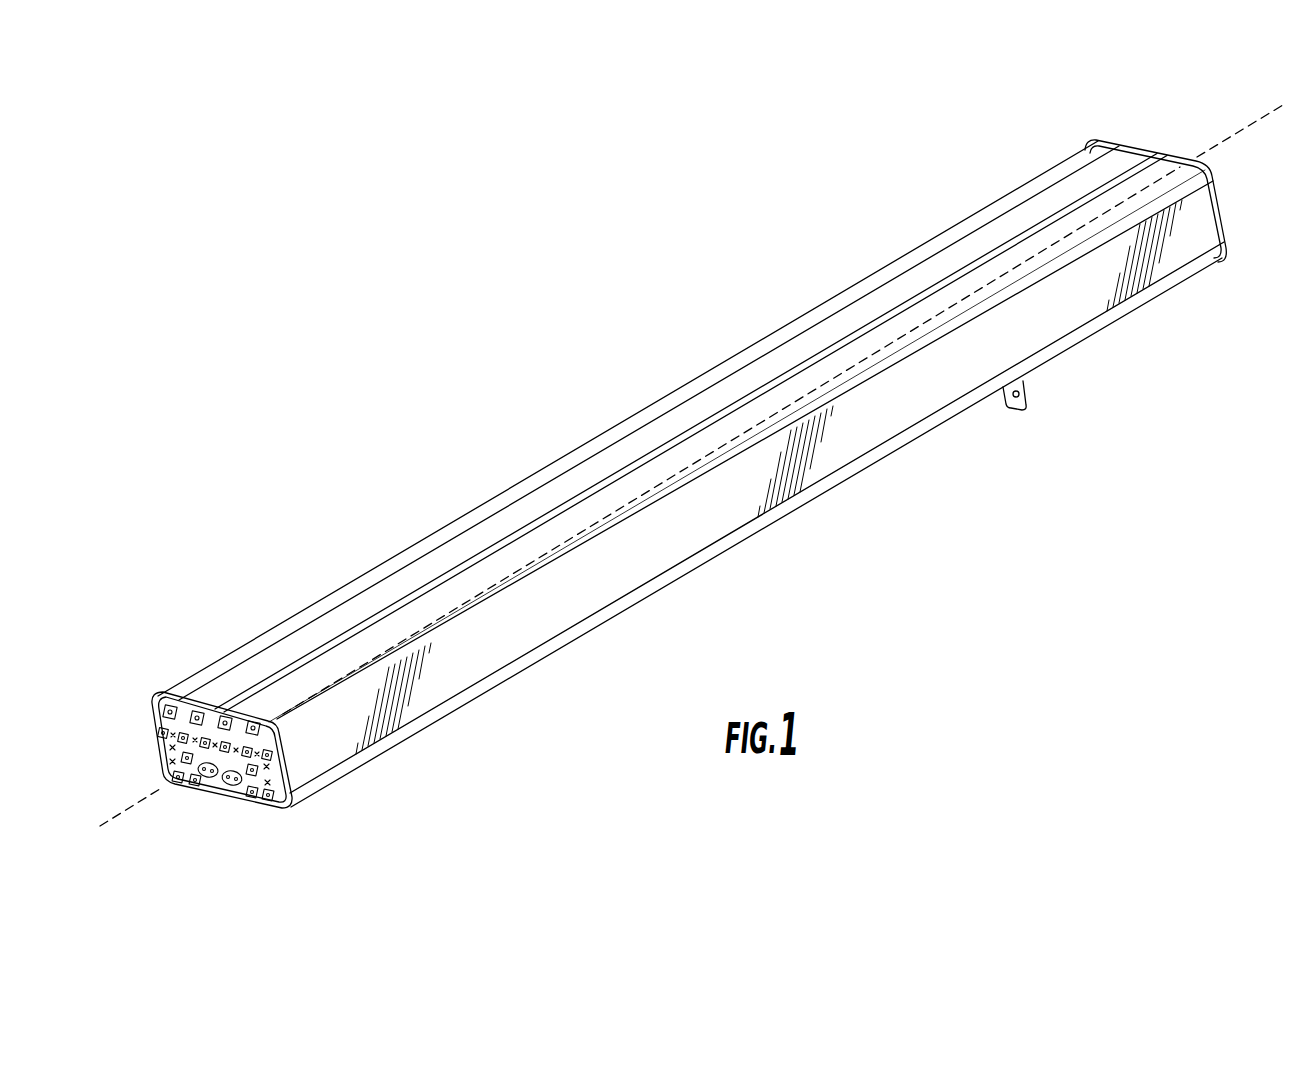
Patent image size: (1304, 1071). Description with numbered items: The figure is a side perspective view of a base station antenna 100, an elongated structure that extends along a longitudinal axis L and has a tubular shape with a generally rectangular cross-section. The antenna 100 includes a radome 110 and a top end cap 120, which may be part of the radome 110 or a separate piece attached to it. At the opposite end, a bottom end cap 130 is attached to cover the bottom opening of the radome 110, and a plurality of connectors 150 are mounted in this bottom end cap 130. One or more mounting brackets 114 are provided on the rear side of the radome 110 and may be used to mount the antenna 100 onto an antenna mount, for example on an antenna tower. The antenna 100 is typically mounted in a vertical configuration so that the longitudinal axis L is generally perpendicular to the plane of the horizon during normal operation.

The base station antenna 100 is at (685, 488).
The radome 110 is at (1166, 272).
The mounting bracket 114 is at (1016, 409).
The top end cap 120 is at (1186, 157).
The bottom end cap 130 is at (160, 720).
The connectors 150 is at (245, 803).